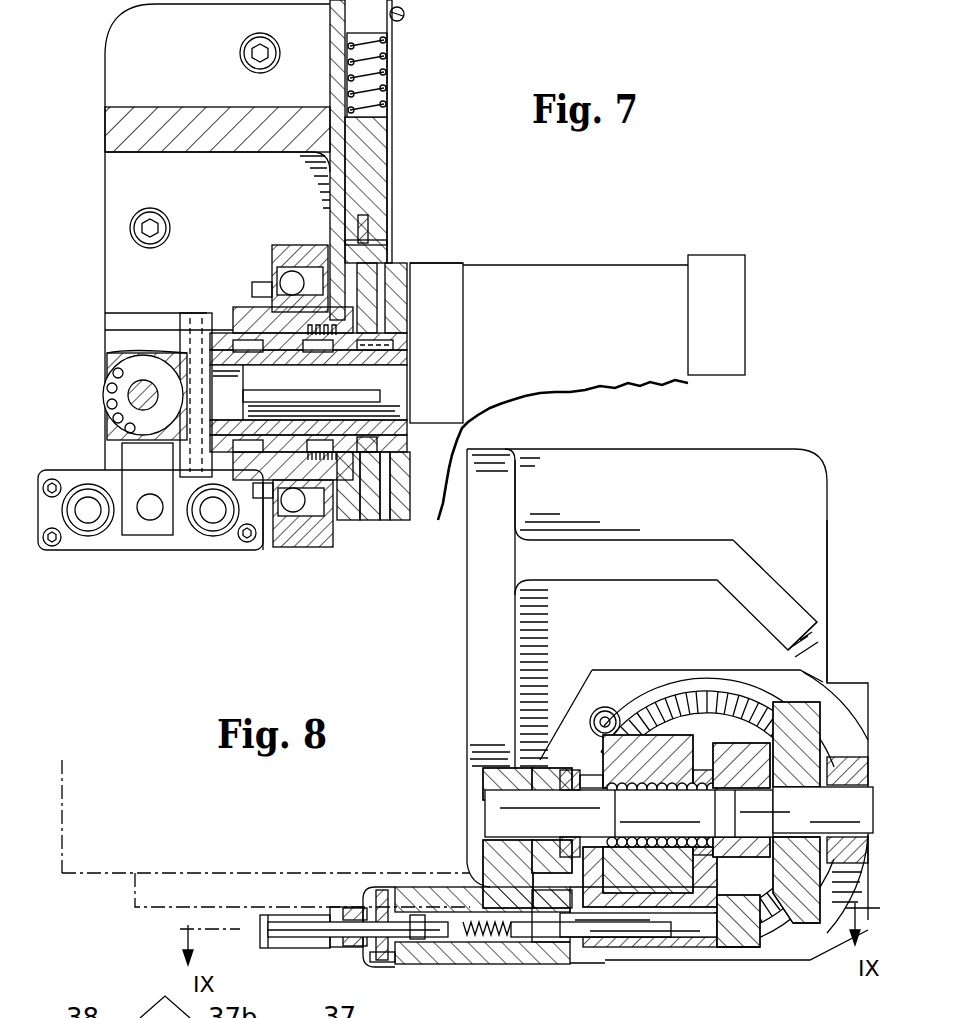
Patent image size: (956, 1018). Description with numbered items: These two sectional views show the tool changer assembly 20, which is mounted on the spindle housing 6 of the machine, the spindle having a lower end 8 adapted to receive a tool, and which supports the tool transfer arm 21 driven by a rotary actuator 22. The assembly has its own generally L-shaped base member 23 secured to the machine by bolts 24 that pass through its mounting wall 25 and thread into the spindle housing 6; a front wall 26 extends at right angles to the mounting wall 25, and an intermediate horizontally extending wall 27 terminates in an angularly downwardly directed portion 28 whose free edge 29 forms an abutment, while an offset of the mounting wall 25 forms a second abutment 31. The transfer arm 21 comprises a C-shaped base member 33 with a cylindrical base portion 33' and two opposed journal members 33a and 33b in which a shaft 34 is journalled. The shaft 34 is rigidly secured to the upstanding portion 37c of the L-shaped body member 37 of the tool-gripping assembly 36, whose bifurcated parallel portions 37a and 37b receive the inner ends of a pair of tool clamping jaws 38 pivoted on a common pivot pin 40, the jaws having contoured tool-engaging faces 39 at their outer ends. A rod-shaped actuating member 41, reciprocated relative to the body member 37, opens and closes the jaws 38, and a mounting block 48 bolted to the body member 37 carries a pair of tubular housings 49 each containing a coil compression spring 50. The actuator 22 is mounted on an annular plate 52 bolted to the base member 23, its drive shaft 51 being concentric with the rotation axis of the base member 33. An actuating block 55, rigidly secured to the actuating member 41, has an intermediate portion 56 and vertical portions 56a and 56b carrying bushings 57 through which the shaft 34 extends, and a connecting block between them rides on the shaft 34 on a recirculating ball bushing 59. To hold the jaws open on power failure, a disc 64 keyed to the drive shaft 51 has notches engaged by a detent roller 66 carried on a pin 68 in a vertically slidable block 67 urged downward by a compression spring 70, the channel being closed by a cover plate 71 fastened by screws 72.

In FIG. 8, the spindle housing 6 is at (56, 818).
In FIG. 8, the lower end of spindle 8 is at (125, 906).
In FIG. 7, the tool changer assembly 20 is at (420, 262).
In FIG. 8, the tool changer assembly 20 is at (660, 460).
In FIG. 7, the tool transfer arm 21 is at (267, 560).
In FIG. 8, the tool transfer arm 21 is at (712, 968).
In FIG. 7, the actuator 22 is at (628, 270).
In FIG. 8, the base member 23 is at (830, 480).
In FIG. 7, the bolts 24 is at (240, 52).
In FIG. 7, the mounting wall 25 is at (105, 275).
In FIG. 8, the mounting wall 25 is at (472, 616).
In FIG. 7, the front wall 26 is at (336, 178).
In FIG. 7, the intermediate wall 27 is at (118, 112).
In FIG. 8, the intermediate wall 27 is at (605, 548).
In FIG. 8, the downwardly directed portion 28 is at (760, 585).
In FIG. 8, the free edge 29 is at (815, 636).
In FIG. 8, the abutment 31 is at (475, 775).
In FIG. 7, the base member of transfer arm 33 is at (303, 545).
In FIG. 8, the base member of transfer arm 33 is at (704, 782).
In FIG. 7, the cylindrical base portion 33' is at (271, 268).
In FIG. 8, the journal member 33a is at (862, 768).
In FIG. 8, the journal member 33b is at (560, 850).
In FIG. 8, the shaft 34 is at (492, 820).
In FIG. 8, the tool-gripping assembly 36 is at (530, 970).
In FIG. 8, the body member 37 is at (490, 966).
In FIG. 8, the parallel portion 37a is at (385, 890).
In FIG. 8, the parallel portion 37b is at (410, 966).
In FIG. 8, the upstanding portion 37c is at (500, 760).
In FIG. 8, the tool clamping jaws 38 is at (310, 950).
In FIG. 8, the tool-engaging faces 39 is at (290, 920).
In FIG. 8, the pivot pin 40 is at (352, 912).
In FIG. 7, the actuating member 41 is at (148, 520).
In FIG. 8, the actuating member 41 is at (650, 945).
In FIG. 7, the mounting block 48 is at (170, 552).
In FIG. 8, the mounting block 48 is at (565, 962).
In FIG. 7, the tubular housings 49 is at (90, 490).
In FIG. 7, the coil compression spring 50 is at (88, 538).
In FIG. 7, the drive shaft 51 is at (395, 375).
In FIG. 7, the annular plate 52 is at (398, 522).
In FIG. 7, the actuating block 55 is at (130, 356).
In FIG. 8, the actuating block 55 is at (745, 920).
In FIG. 8, the intermediate portion 56 is at (668, 910).
In FIG. 8, the vertically extending portion 56a is at (590, 770).
In FIG. 8, the vertically extending portion 56b is at (715, 780).
In FIG. 8, the bushings 57 is at (760, 770).
In FIG. 8, the ball bushing 59 is at (660, 760).
In FIG. 7, the disc 64 is at (358, 522).
In FIG. 7, the detent roller 66 is at (370, 225).
In FIG. 7, the vertically movable block 67 is at (378, 160).
In FIG. 7, the pin 68 is at (390, 243).
In FIG. 7, the compression spring 70 is at (390, 72).
In FIG. 7, the cover plate 71 is at (392, 112).
In FIG. 7, the screws 72 is at (402, 18).